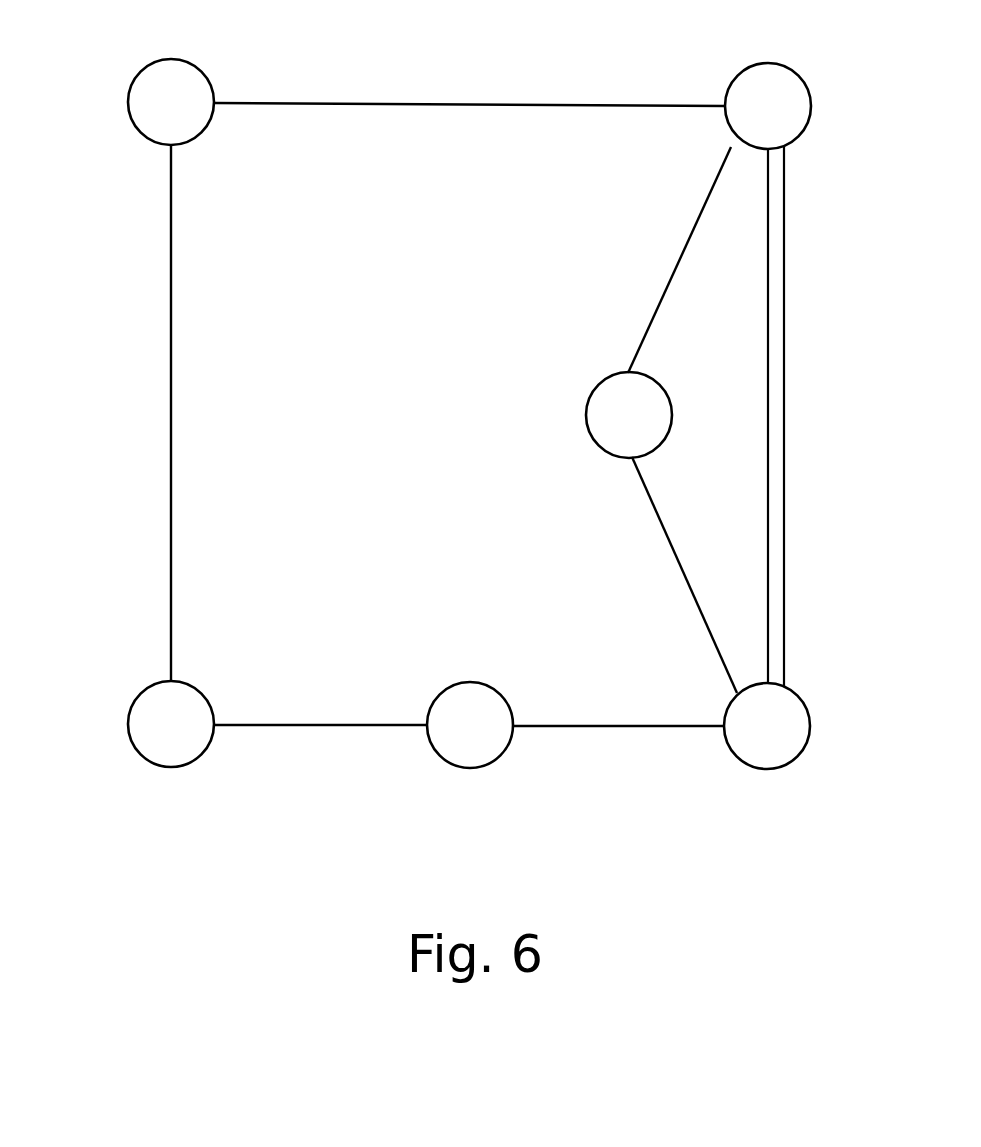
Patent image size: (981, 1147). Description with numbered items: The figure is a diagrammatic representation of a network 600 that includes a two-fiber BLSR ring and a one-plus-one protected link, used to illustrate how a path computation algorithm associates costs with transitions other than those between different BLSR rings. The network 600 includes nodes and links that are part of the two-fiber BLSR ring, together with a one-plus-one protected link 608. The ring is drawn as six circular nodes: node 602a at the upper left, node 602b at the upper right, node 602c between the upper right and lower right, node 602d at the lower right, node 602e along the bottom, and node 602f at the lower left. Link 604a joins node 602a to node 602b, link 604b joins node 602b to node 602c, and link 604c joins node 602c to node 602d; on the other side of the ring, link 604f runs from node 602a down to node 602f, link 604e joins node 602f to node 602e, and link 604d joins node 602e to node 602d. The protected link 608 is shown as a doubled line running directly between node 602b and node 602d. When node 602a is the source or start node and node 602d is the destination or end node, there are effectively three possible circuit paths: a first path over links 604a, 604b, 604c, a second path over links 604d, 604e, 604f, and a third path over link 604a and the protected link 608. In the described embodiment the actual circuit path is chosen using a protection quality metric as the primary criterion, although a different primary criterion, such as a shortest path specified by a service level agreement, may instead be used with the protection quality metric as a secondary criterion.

The network 600 is at (122, 855).
The node 602a is at (197, 62).
The node 602b is at (777, 64).
The node 602c is at (595, 388).
The node 602d is at (806, 706).
The node 602e is at (498, 688).
The node 602f is at (188, 685).
The link 604a is at (383, 104).
The link 604b is at (658, 313).
The link 604c is at (648, 492).
The link 604d is at (617, 728).
The link 604e is at (267, 727).
The link 604f is at (173, 430).
The 1+1 link 608 is at (786, 268).